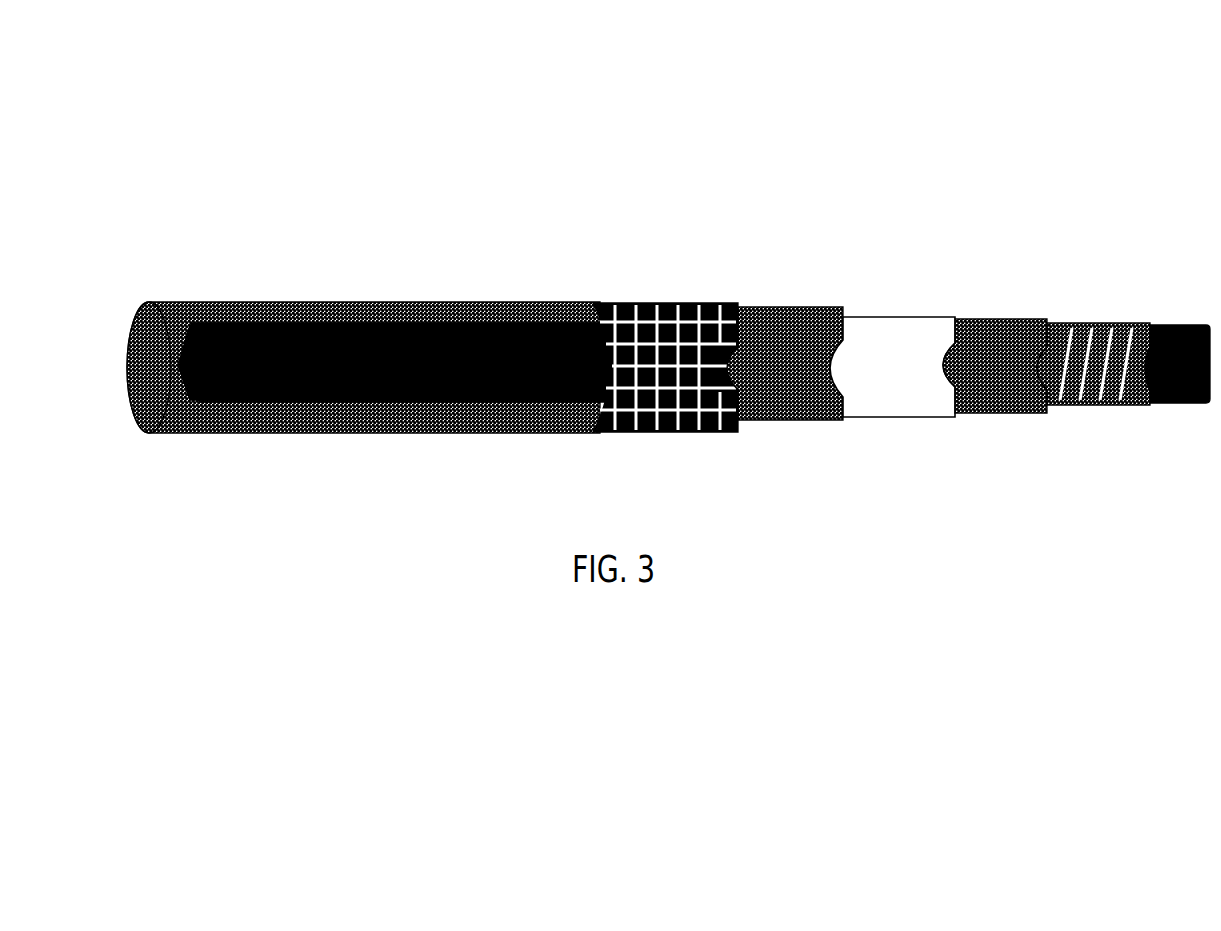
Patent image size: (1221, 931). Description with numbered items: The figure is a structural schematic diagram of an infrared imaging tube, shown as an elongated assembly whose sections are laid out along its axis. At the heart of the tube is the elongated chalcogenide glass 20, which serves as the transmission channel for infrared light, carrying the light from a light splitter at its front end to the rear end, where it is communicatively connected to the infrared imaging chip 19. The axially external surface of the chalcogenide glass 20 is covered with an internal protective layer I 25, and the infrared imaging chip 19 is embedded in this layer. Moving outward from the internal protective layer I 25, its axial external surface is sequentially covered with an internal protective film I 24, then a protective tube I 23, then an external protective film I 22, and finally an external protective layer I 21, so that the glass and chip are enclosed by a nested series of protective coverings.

The infrared imaging chip 19 is at (207, 370).
The chalcogenide glass 20 is at (415, 323).
The external protective layer I 21 is at (668, 303).
The external protective film I 22 is at (801, 323).
The protective tube I 23 is at (900, 340).
The internal protective film I 24 is at (996, 340).
The internal protective layer I 25 is at (1110, 335).